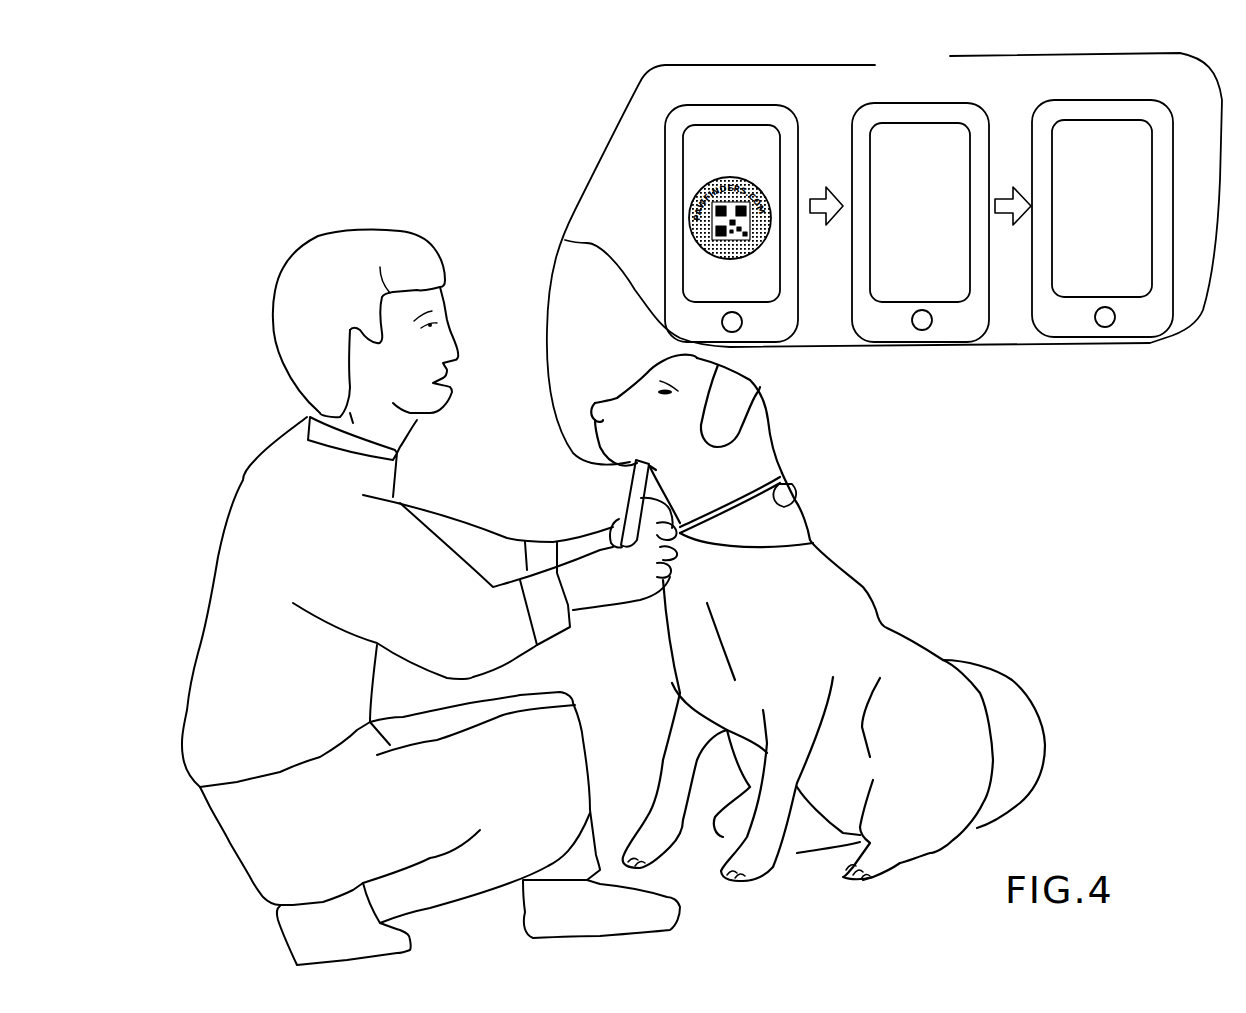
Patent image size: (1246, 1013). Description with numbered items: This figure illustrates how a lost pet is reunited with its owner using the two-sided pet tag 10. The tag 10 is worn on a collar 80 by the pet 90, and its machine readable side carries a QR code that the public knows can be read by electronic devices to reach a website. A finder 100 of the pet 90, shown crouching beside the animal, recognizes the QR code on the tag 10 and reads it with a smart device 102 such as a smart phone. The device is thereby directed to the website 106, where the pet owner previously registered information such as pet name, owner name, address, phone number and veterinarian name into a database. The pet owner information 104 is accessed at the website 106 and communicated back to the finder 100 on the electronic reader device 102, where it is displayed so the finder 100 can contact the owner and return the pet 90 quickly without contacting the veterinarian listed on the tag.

The tag 10 is at (813, 543).
The collar 80 is at (800, 503).
The pet 90 is at (821, 441).
The finder 100 is at (253, 517).
The smart device 102 is at (630, 465).
The pet owner information 104 is at (1132, 278).
The website 106 is at (933, 142).